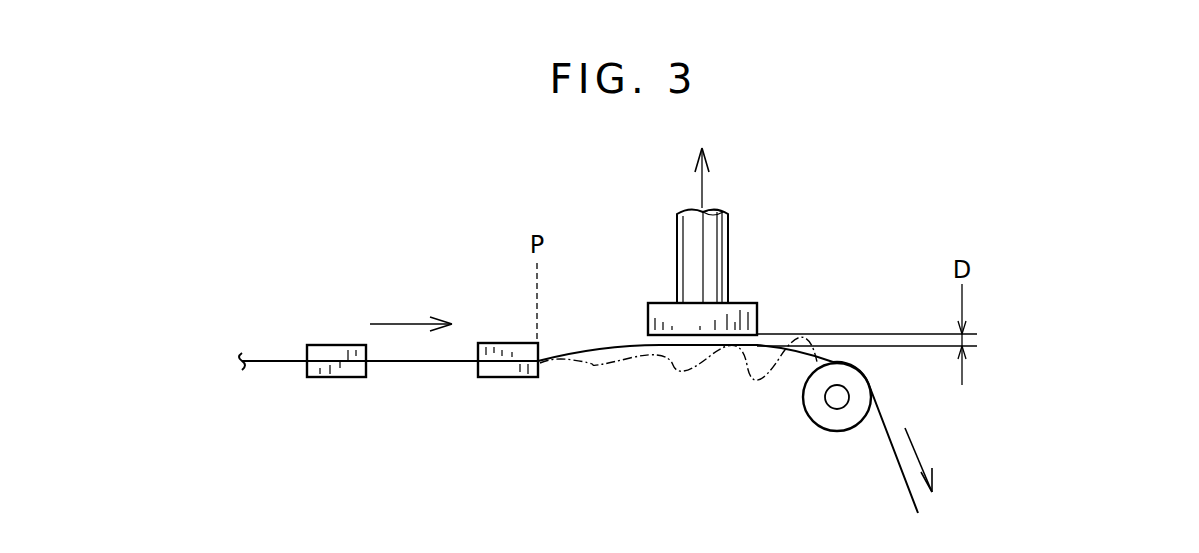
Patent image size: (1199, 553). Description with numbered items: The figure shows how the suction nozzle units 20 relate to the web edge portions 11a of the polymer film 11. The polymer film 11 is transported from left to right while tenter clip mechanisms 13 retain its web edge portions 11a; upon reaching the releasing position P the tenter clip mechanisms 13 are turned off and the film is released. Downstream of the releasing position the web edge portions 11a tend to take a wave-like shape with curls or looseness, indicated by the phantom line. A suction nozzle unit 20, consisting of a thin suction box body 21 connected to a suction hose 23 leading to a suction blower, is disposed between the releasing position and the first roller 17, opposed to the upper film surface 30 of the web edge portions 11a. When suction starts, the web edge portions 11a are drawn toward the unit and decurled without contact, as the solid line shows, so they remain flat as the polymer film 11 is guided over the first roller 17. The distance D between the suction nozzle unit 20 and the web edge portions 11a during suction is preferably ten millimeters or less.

The polymer film 11 is at (419, 362).
The web edge portions 11a is at (645, 347).
The tenter clip mechanisms 13 is at (510, 378).
The first roller 17 is at (835, 432).
The suction nozzle units 20 is at (764, 241).
The suction box body 21 is at (737, 303).
The suction hose 23 is at (728, 240).
The upper film surface 30 is at (608, 348).